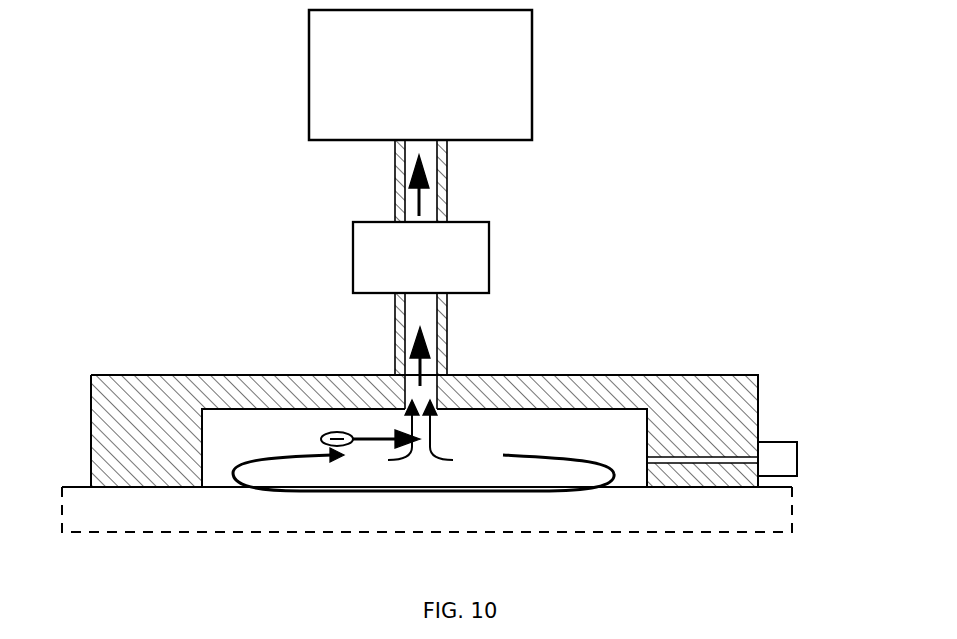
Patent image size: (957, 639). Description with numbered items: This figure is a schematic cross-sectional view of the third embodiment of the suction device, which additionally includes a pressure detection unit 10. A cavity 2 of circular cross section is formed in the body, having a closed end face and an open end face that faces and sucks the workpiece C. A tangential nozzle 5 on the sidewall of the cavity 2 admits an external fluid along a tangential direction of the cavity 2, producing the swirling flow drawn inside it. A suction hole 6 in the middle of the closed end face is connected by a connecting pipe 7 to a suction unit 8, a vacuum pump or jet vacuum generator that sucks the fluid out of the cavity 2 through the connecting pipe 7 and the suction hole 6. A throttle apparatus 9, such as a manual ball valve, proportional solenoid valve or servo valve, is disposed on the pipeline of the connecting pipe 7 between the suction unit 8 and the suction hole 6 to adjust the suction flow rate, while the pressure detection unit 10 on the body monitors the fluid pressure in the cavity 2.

The suction unit 8 is at (333, 37).
The connecting pipe 7 is at (448, 188).
The throttle apparatus 9 is at (363, 248).
The suction hole 6 is at (433, 400).
The tangential nozzle 5 is at (332, 432).
The cavity 2 is at (606, 420).
The pressure detection unit 10 is at (777, 463).
The workpiece C is at (205, 512).